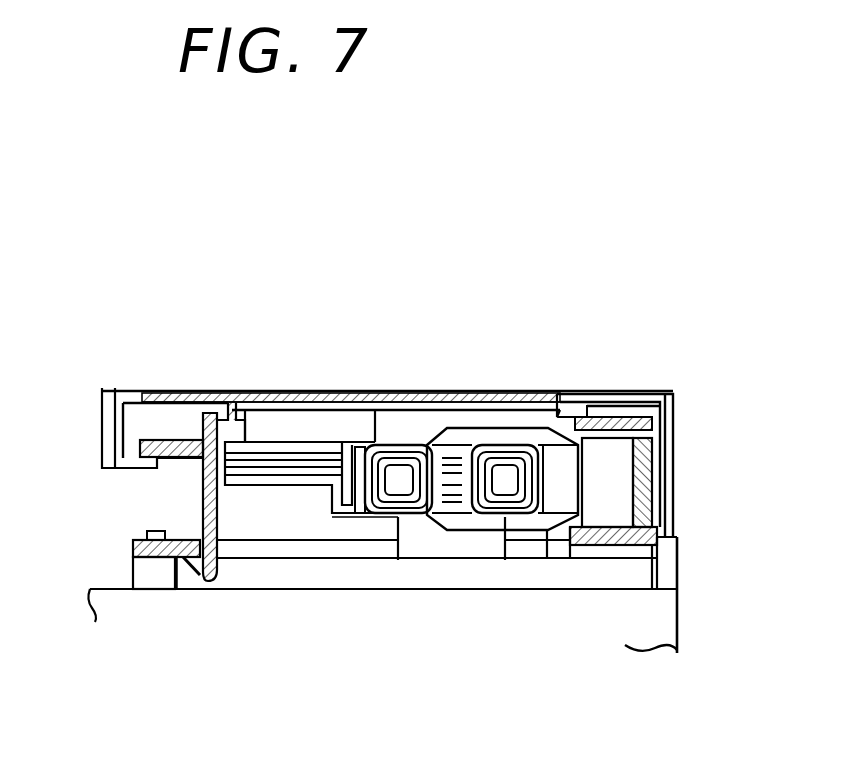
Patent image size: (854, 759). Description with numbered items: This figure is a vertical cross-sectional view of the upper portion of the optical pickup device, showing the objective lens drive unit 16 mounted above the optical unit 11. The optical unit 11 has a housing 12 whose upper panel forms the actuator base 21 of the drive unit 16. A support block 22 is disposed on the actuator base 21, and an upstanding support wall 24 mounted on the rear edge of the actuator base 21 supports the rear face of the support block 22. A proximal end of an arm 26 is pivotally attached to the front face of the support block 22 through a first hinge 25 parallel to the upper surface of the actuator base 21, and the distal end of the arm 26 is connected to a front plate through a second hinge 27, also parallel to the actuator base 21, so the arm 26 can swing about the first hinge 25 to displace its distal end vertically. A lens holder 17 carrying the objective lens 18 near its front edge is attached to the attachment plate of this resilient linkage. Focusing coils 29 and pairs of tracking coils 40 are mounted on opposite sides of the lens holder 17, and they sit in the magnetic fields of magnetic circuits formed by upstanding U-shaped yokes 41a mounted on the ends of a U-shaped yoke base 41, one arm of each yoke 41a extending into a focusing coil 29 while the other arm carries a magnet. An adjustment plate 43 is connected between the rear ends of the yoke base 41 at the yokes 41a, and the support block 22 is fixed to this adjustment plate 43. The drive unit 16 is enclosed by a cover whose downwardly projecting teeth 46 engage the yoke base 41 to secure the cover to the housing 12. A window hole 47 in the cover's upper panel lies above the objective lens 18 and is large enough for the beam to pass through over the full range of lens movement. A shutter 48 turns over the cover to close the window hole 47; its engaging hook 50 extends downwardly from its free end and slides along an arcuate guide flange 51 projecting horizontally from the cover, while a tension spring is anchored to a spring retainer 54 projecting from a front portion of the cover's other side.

The optical unit 11 is at (690, 611).
The housing 12 is at (118, 600).
The objective lens drive unit 16 is at (696, 430).
The lens holder 17 is at (267, 445).
The objective lens 18 is at (300, 420).
The actuator base 21 is at (463, 593).
The support block 22 is at (610, 463).
The support wall 24 is at (678, 547).
The first hinge 25 is at (570, 448).
The arm 26 is at (510, 435).
The second hinge 27 is at (428, 442).
The focusing coil 29 is at (452, 487).
The tracking coil 40 is at (388, 500).
The yoke base 41 is at (270, 550).
The yoke 41a is at (452, 547).
The adjustment plate 43 is at (607, 538).
The teeth 46 is at (193, 573).
The window hole 47 is at (365, 392).
The shutter 48 is at (488, 392).
The engaging hook 50 is at (90, 410).
The arcuate guide flange 51 is at (173, 433).
The spring retainer 54 is at (148, 530).